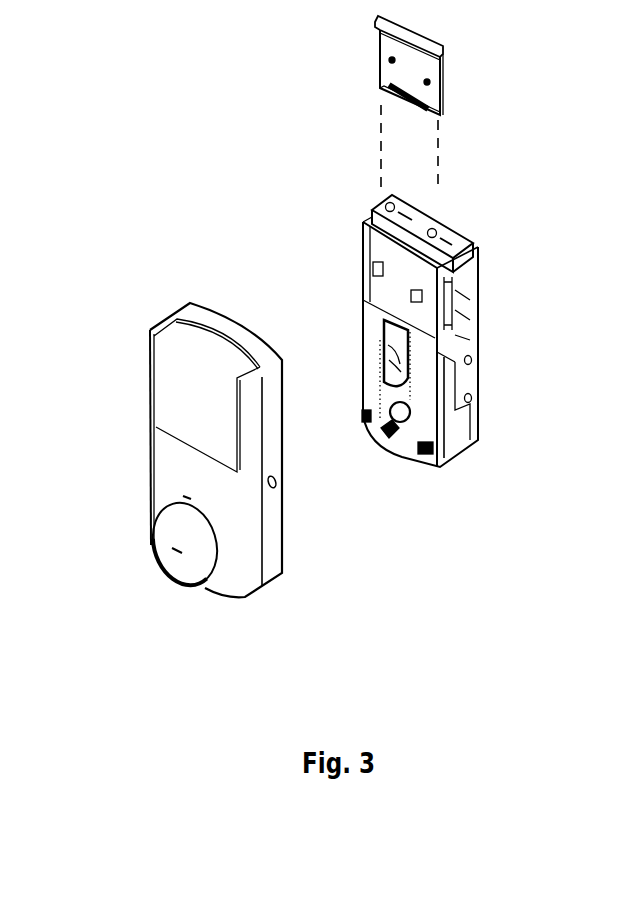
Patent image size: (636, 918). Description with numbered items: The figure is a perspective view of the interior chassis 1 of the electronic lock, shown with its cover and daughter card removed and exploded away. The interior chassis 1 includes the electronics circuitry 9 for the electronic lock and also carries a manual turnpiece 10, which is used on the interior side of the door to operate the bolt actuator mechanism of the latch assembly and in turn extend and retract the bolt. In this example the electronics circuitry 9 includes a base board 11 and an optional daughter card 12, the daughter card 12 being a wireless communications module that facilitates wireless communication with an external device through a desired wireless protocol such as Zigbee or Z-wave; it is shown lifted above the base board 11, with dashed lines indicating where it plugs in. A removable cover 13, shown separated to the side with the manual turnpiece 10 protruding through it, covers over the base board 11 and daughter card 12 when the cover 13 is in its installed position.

The interior chassis 1 is at (468, 551).
The electronics circuitry 9 is at (288, 225).
The manual turnpiece 10 is at (153, 548).
The base board 11 is at (494, 315).
The daughter card 12 is at (459, 74).
The removable cover 13 is at (131, 391).